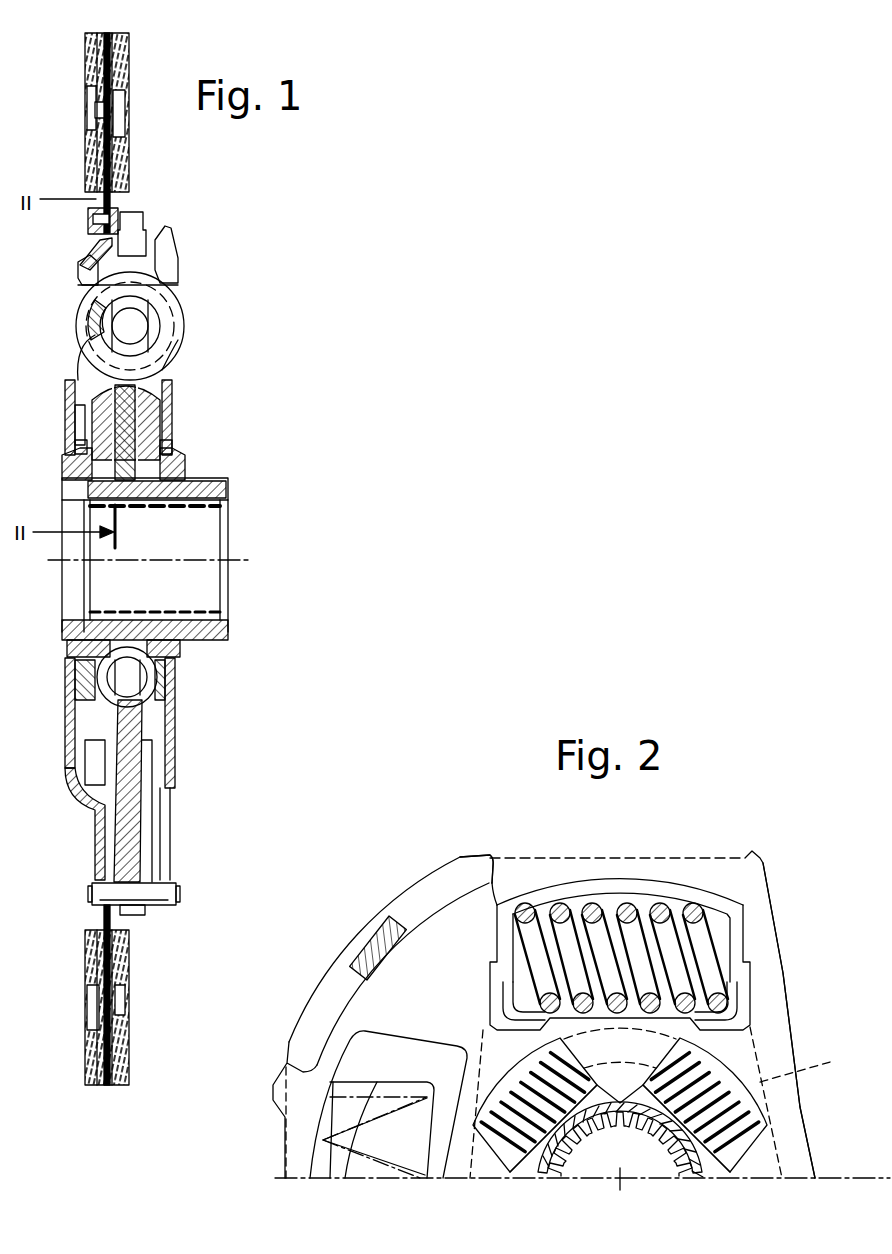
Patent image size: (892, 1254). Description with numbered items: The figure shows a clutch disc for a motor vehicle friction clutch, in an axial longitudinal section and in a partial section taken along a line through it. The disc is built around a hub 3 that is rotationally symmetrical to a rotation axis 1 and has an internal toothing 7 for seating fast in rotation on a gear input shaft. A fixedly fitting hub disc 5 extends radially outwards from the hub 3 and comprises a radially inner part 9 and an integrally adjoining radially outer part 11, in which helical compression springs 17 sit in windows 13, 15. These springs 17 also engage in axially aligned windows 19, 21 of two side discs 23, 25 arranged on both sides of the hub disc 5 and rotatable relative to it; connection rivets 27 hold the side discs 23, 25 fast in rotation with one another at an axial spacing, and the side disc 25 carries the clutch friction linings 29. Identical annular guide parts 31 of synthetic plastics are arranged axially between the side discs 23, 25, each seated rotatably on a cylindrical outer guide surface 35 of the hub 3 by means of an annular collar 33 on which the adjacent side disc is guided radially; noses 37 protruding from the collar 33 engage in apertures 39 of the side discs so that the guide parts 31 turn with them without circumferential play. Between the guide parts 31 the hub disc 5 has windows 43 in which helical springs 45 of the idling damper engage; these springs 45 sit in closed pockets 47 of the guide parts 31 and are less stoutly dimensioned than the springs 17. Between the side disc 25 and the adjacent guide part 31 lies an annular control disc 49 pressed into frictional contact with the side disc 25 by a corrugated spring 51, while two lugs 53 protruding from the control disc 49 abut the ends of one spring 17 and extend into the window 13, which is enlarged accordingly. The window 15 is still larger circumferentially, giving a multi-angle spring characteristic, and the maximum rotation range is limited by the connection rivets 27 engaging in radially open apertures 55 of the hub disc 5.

In FIG. 1, the rotation axis 1 is at (240, 590).
In FIG. 2, the rotation axis 1 is at (628, 1190).
In FIG. 1, the hub 3 is at (225, 502).
In FIG. 2, the hub 3 is at (690, 1172).
In FIG. 1, the hub disc 5 is at (142, 238).
In FIG. 2, the hub disc 5 is at (358, 1012).
In FIG. 1, the internal toothing 7 is at (218, 515).
In FIG. 2, the internal toothing 7 is at (565, 1175).
In FIG. 1, the radially inner part 9 is at (163, 400).
In FIG. 1, the radially outer part 11 is at (145, 838).
In FIG. 1, the window 13 is at (133, 258).
In FIG. 2, the window 13 is at (657, 887).
In FIG. 2, the window 15 is at (430, 1050).
In FIG. 1, the helical compression springs 17 is at (100, 318).
In FIG. 2, the helical compression springs 17 is at (598, 903).
In FIG. 1, the window 19 is at (175, 268).
In FIG. 2, the window 19 is at (743, 938).
In FIG. 1, the window 21 is at (80, 268).
In FIG. 1, the side disc 23 is at (170, 360).
In FIG. 2, the side disc 23 is at (472, 862).
In FIG. 1, the side disc 25 is at (78, 365).
In FIG. 1, the connection rivets 27 is at (150, 905).
In FIG. 2, the connection rivets 27 is at (383, 928).
In FIG. 1, the clutch friction linings 29 is at (128, 48).
In FIG. 1, the guide parts 31 is at (65, 388).
In FIG. 1, the annular collar 33 is at (67, 648).
In FIG. 1, the cylindrical outer guide surface 35 is at (210, 480).
In FIG. 1, the noses 37 is at (62, 470).
In FIG. 1, the apertures 39 is at (75, 447).
In FIG. 1, the windows 43 is at (172, 745).
In FIG. 2, the windows 43 is at (753, 1062).
In FIG. 1, the helical springs 45 is at (65, 668).
In FIG. 2, the helical springs 45 is at (745, 1120).
In FIG. 1, the pockets 47 is at (160, 700).
In FIG. 1, the control disc 49 is at (75, 420).
In FIG. 2, the control disc 49 is at (790, 1070).
In FIG. 1, the corrugated spring 51 is at (100, 680).
In FIG. 1, the lugs 53 is at (88, 795).
In FIG. 2, the lugs 53 is at (503, 995).
In FIG. 2, the radially open apertures 55 is at (445, 908).